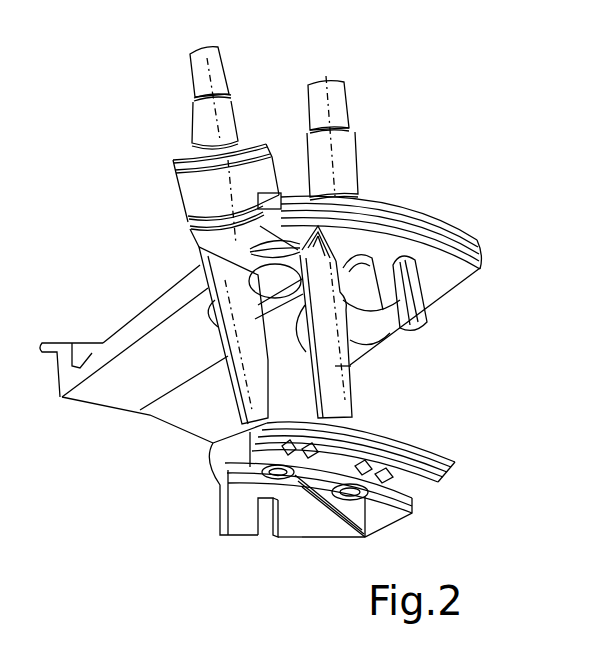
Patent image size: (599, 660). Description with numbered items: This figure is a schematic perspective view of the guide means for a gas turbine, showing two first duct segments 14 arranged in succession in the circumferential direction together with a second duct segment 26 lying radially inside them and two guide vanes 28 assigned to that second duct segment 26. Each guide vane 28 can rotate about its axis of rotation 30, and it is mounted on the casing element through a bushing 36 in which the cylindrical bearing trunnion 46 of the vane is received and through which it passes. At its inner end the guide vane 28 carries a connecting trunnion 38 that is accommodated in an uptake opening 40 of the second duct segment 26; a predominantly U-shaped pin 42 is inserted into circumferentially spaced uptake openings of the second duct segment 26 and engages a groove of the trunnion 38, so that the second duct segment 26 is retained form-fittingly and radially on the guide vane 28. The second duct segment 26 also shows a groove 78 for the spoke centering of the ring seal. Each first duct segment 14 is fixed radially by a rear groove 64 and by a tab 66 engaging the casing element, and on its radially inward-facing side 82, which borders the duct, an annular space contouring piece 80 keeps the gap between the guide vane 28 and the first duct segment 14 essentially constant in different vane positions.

The first duct segment 14 is at (360, 197).
The second duct segment 26 is at (403, 490).
The guide vane 28 is at (214, 338).
The axis of rotation 30 is at (201, 46).
The bushing 36 is at (253, 175).
The trunnion 38 is at (350, 476).
The uptake opening 40 is at (337, 508).
The pin 42 is at (348, 415).
The trunnion 46 is at (230, 120).
The rear groove 64 is at (336, 197).
The tab 66 is at (47, 343).
The groove 78 is at (258, 534).
The annular space contouring piece 80 is at (433, 289).
The side 82 is at (114, 405).